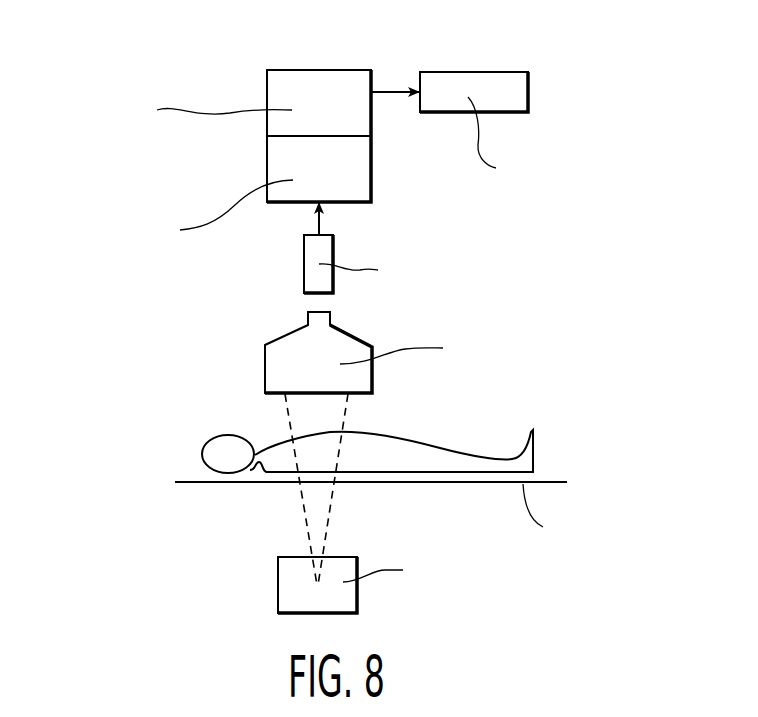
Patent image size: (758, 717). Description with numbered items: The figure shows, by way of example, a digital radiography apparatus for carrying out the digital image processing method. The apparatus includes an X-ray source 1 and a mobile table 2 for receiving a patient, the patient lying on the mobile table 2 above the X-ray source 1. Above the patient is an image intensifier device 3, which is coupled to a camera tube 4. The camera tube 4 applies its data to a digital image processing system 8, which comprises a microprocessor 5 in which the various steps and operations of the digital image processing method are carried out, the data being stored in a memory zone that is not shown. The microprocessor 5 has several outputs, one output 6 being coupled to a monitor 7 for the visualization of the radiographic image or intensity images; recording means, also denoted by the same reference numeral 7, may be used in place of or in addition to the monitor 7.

The X-ray source 1 is at (276, 587).
The mobile table 2 is at (238, 486).
The image intensifier device 3 is at (264, 344).
The camera tube 4 is at (299, 265).
The microprocessor 5 is at (284, 89).
The output 6 is at (389, 88).
The monitor 7 is at (529, 89).
The digital image processing system 8 is at (280, 158).